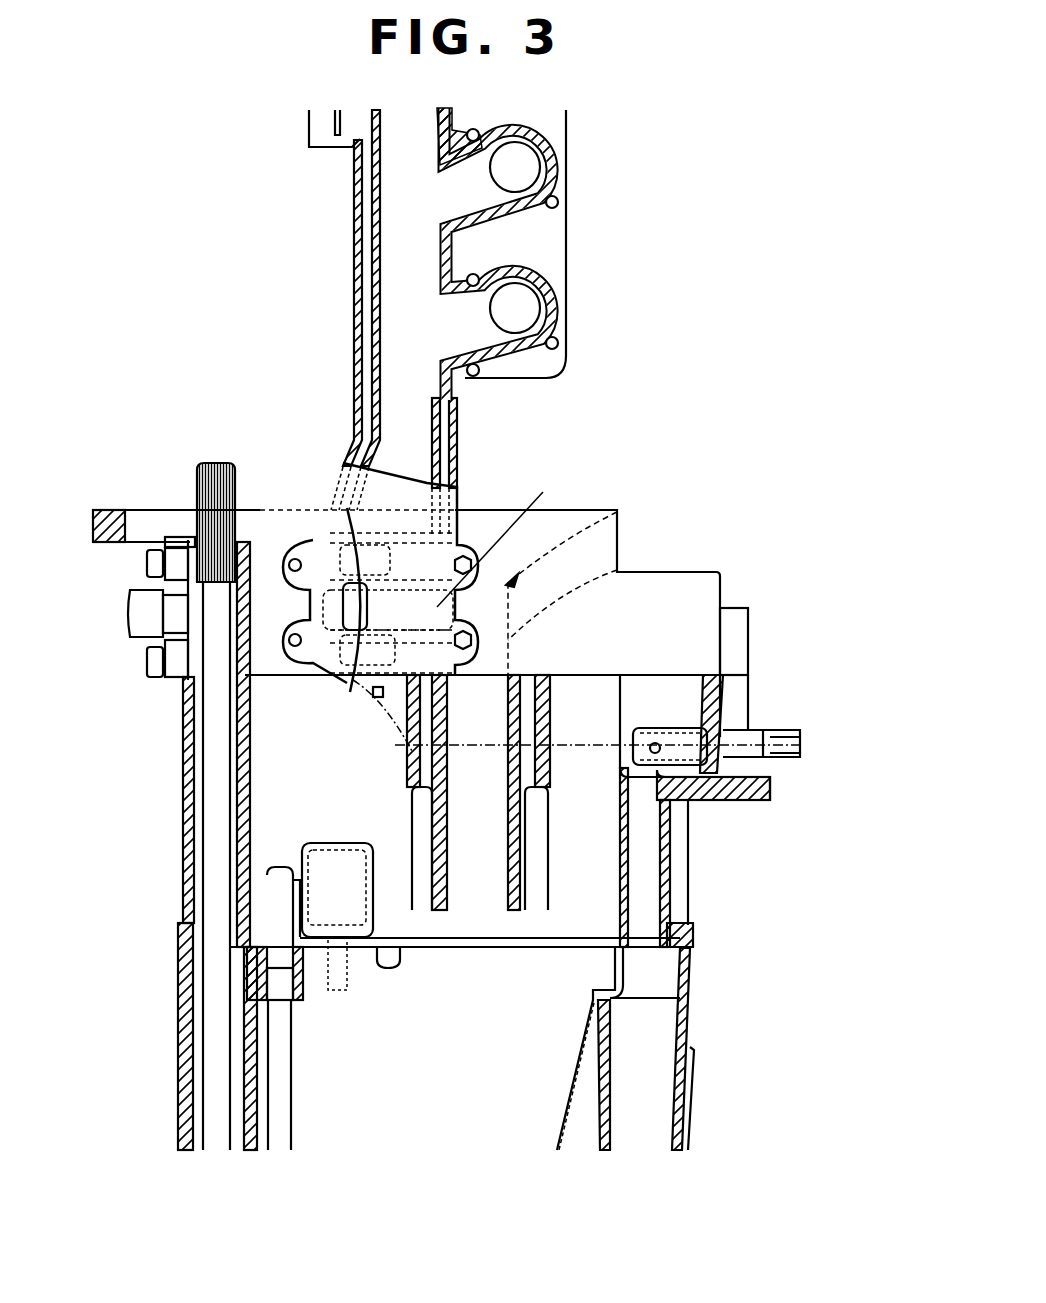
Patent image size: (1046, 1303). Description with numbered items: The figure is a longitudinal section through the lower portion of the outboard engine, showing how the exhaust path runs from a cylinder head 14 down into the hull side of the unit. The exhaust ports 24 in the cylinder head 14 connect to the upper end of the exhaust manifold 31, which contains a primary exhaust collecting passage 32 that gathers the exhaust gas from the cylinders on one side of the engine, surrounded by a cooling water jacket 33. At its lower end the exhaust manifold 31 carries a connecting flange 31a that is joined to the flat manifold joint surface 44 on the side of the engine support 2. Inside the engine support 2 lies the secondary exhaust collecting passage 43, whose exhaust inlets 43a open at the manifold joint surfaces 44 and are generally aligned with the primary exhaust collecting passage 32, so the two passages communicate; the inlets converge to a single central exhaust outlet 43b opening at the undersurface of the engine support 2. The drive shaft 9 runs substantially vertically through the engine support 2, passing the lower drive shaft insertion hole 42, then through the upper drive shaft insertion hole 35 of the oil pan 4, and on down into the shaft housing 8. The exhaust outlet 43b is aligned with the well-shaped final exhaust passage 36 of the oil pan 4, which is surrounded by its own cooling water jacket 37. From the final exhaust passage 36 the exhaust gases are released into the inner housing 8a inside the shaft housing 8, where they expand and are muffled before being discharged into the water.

The engine support 2 is at (721, 573).
The oil pan 4 is at (687, 870).
The shaft housing 8 is at (690, 1007).
The inner housing 8a is at (570, 1100).
The drive shaft 9 is at (215, 755).
The cylinder head 14 is at (547, 245).
The exhaust port 24 is at (527, 163).
The exhaust manifold 31 is at (354, 214).
The connecting flange 31a is at (509, 536).
The primary exhaust collecting passage 32 is at (407, 262).
The cooling water jacket 33 is at (510, 223).
The upper drive shaft insertion hole 35 is at (208, 852).
The final exhaust passage 36 is at (488, 880).
The cooling water jacket 37 is at (533, 817).
The lower drive shaft insertion hole 42 is at (203, 611).
The secondary exhaust collecting passage 43 is at (620, 510).
The exhaust inlet 43a is at (318, 612).
The exhaust outlet 43b is at (623, 567).
The manifold joint surface 44 is at (207, 518).